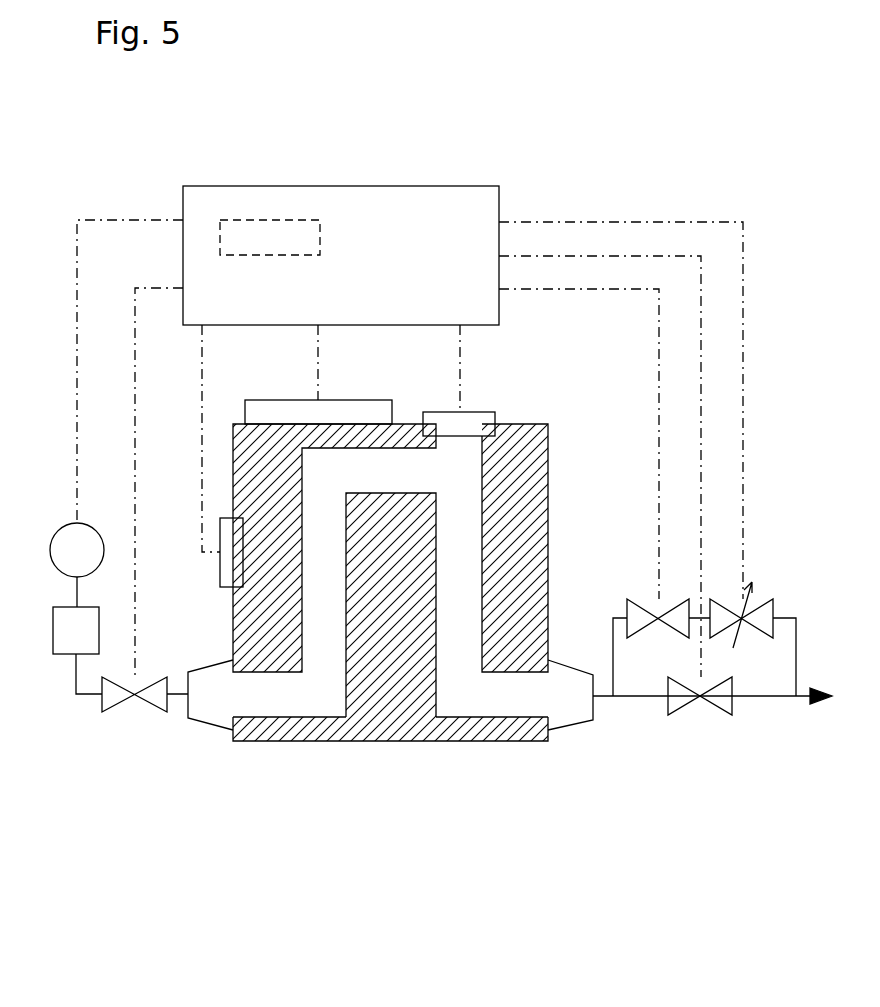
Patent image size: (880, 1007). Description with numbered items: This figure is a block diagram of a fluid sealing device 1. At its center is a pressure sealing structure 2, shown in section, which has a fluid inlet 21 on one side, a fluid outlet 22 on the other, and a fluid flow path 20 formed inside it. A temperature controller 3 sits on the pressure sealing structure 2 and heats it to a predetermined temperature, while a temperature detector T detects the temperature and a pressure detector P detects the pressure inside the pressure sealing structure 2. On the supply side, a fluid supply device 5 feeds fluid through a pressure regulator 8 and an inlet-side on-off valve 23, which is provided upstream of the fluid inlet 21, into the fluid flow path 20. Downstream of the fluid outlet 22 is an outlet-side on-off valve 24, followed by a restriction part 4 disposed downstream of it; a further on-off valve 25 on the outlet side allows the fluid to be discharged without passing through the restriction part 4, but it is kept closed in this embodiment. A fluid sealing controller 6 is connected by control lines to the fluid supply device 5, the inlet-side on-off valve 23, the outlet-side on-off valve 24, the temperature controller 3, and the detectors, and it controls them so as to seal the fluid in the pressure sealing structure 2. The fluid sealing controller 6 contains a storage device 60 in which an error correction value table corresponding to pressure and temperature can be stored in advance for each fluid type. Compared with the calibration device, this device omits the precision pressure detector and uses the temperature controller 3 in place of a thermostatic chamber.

The fluid sealing device 1 is at (399, 690).
The pressure sealing structure 2 is at (549, 495).
The fluid flow path 20 is at (318, 680).
The fluid inlet 21 is at (212, 727).
The fluid outlet 22 is at (577, 743).
The temperature controller 3 is at (343, 400).
The pressure detector P is at (478, 412).
The temperature detector T is at (212, 567).
The restriction part 4 is at (760, 603).
The fluid supply device 5 is at (58, 528).
The fluid sealing controller 6 is at (417, 186).
The storage device 60 is at (270, 222).
The pressure regulator 8 is at (62, 655).
The inlet-side on-off valve 23 is at (145, 707).
The outlet-side on-off valve 24 is at (640, 600).
The on-off valve 25 is at (720, 707).